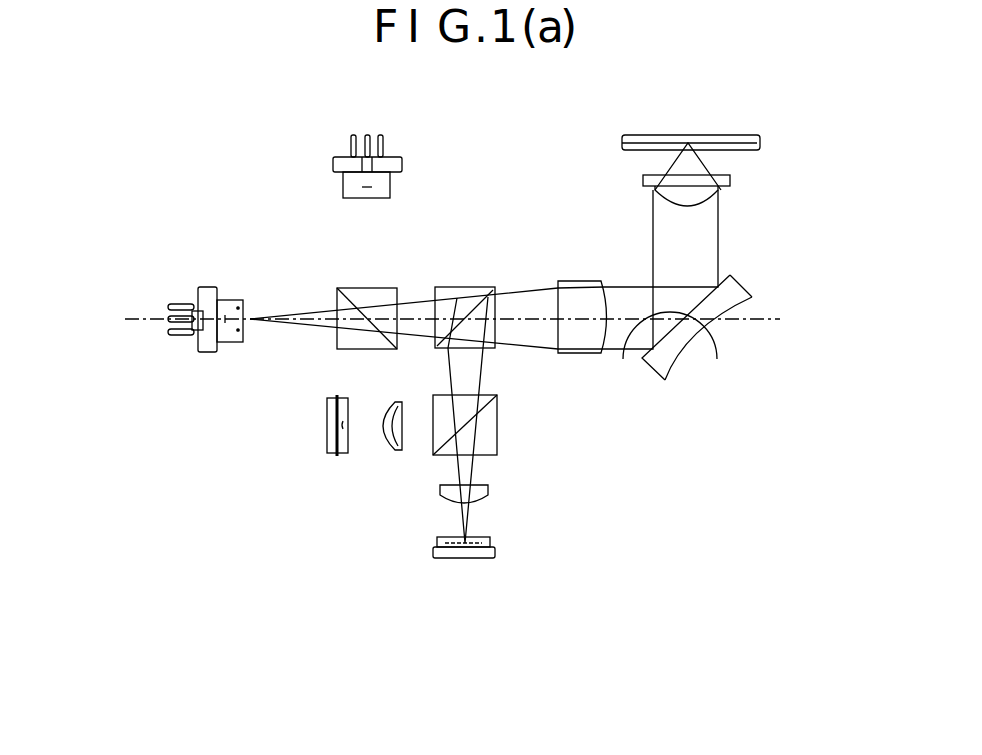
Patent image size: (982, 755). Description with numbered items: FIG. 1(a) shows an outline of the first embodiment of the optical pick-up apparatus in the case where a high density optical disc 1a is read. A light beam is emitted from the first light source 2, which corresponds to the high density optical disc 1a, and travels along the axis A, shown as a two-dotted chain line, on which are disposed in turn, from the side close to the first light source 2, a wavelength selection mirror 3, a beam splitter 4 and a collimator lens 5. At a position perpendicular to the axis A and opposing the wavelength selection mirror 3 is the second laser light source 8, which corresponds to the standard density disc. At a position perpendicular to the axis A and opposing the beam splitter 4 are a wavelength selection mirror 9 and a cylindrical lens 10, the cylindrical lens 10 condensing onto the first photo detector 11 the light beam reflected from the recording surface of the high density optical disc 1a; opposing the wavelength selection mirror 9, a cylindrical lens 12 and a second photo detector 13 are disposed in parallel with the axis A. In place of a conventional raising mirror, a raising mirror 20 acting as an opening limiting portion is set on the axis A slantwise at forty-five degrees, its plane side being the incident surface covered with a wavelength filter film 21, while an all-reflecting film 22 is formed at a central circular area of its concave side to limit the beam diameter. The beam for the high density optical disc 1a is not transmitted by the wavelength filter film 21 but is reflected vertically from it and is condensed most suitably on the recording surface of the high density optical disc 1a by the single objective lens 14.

The high density optical disc 1a is at (757, 143).
The first light source 2 is at (207, 298).
The wavelength selection mirror 3 is at (357, 295).
The beam splitter 4 is at (462, 302).
The collimator lens 5 is at (577, 307).
The second laser light source 8 is at (333, 165).
The wavelength selection mirror 9 is at (490, 425).
The cylindrical lens 10 is at (487, 490).
The first photo detector 11 is at (493, 543).
The cylindrical lens 12 is at (395, 442).
The second photo detector 13 is at (330, 428).
The objective lens 14 is at (643, 182).
The raising mirror 20 is at (743, 340).
The wavelength filter film 21 is at (623, 352).
The all-reflecting film 22 is at (713, 338).
The axis A is at (727, 320).